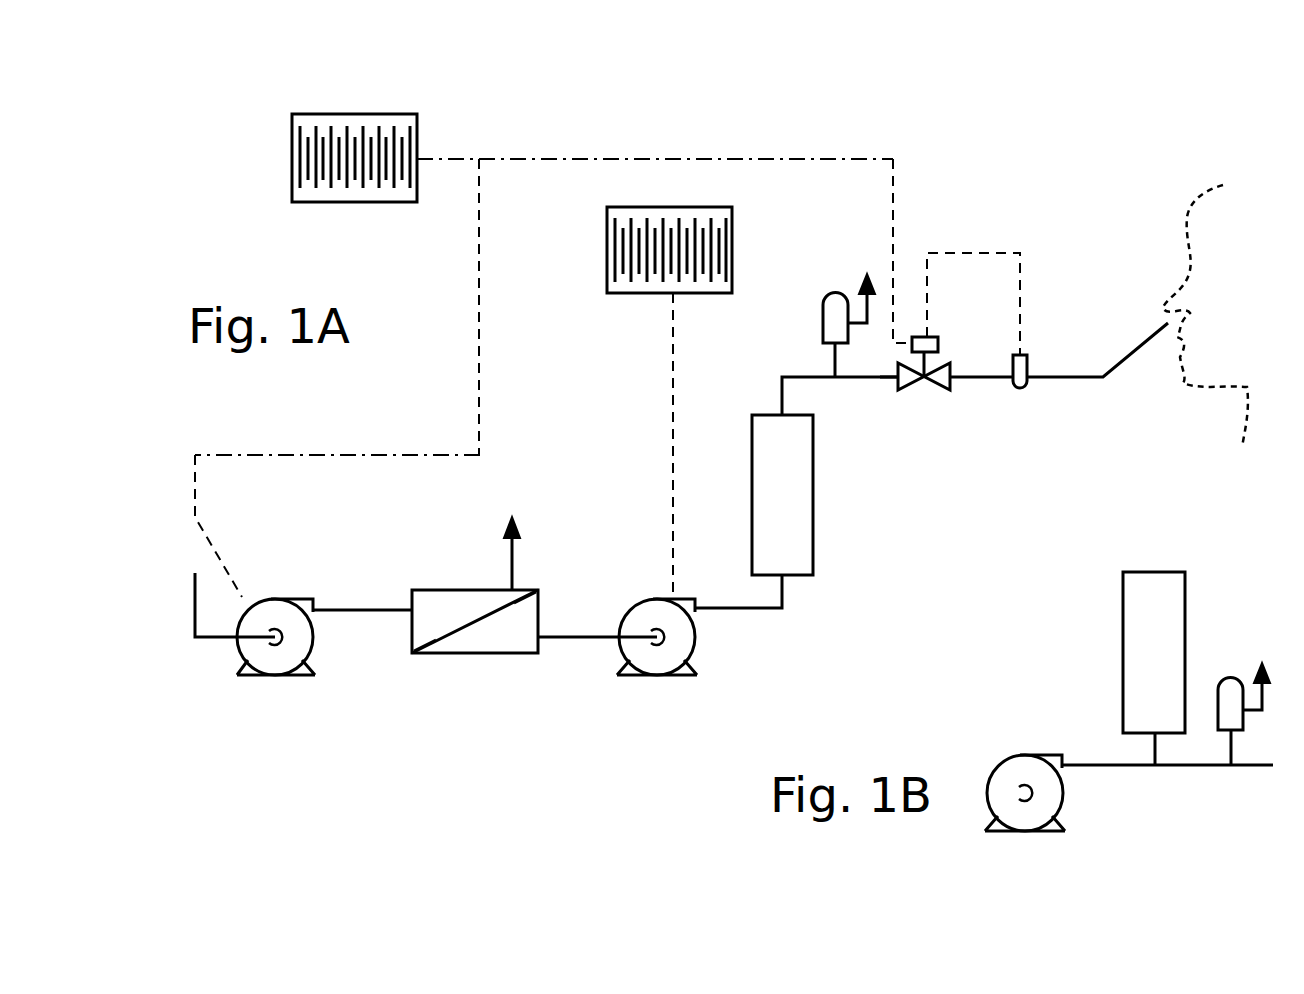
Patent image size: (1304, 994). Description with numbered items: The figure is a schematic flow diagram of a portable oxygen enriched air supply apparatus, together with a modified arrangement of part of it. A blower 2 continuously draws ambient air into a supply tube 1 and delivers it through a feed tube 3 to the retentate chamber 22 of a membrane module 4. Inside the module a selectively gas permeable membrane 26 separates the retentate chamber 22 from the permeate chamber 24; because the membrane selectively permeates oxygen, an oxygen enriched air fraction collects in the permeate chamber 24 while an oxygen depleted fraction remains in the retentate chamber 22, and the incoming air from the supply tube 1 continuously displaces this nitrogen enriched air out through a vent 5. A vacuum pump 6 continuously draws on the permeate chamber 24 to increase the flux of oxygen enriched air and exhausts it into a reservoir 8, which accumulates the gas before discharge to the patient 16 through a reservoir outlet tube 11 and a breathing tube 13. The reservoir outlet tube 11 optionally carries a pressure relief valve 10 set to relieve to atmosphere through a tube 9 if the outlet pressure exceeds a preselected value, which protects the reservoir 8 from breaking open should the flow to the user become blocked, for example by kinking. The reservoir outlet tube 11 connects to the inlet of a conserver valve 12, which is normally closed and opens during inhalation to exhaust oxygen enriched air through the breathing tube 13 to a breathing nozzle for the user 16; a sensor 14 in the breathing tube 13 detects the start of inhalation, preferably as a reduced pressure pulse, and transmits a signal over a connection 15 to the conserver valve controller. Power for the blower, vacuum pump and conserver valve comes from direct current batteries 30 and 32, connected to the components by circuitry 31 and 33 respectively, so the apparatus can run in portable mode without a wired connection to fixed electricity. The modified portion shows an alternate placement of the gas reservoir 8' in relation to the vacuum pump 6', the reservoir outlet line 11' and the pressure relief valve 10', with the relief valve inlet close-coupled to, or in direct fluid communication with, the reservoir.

In FIG. 1A, the supply tube 1 is at (227, 637).
In FIG. 1A, the blower 2 is at (288, 597).
In FIG. 1A, the feed tube 3 is at (370, 608).
In FIG. 1A, the membrane module 4 is at (420, 590).
In FIG. 1A, the vent 5 is at (512, 553).
In FIG. 1A, the vacuum pump 6 is at (660, 596).
In FIG. 1A, the reservoir 8 is at (825, 476).
In FIG. 1A, the tube 9 is at (862, 308).
In FIG. 1A, the pressure relief valve 10 is at (812, 294).
In FIG. 1A, the reservoir outlet tube 11 is at (874, 421).
In FIG. 1A, the conserver valve 12 is at (950, 380).
In FIG. 1A, the breathing tube 13 is at (985, 380).
In FIG. 1A, the sensor 14 is at (1023, 388).
In FIG. 1A, the connection 15 is at (1010, 250).
In FIG. 1A, the patient 16 is at (1183, 242).
In FIG. 1A, the retentate chamber 22 is at (423, 633).
In FIG. 1A, the permeate chamber 24 is at (523, 637).
In FIG. 1A, the selectively gas permeable membrane 26 is at (487, 628).
In FIG. 1A, the direct current battery 30 is at (395, 114).
In FIG. 1A, the circuitry 31 is at (527, 160).
In FIG. 1A, the direct current battery 32 is at (607, 267).
In FIG. 1A, the circuitry 33 is at (677, 538).
In FIG. 1B, the vacuum pump 6' is at (1018, 764).
In FIG. 1B, the gas reservoir 8' is at (1126, 668).
In FIG. 1B, the pressure relief valve 10' is at (1235, 683).
In FIG. 1B, the reservoir outlet line 11' is at (1167, 810).